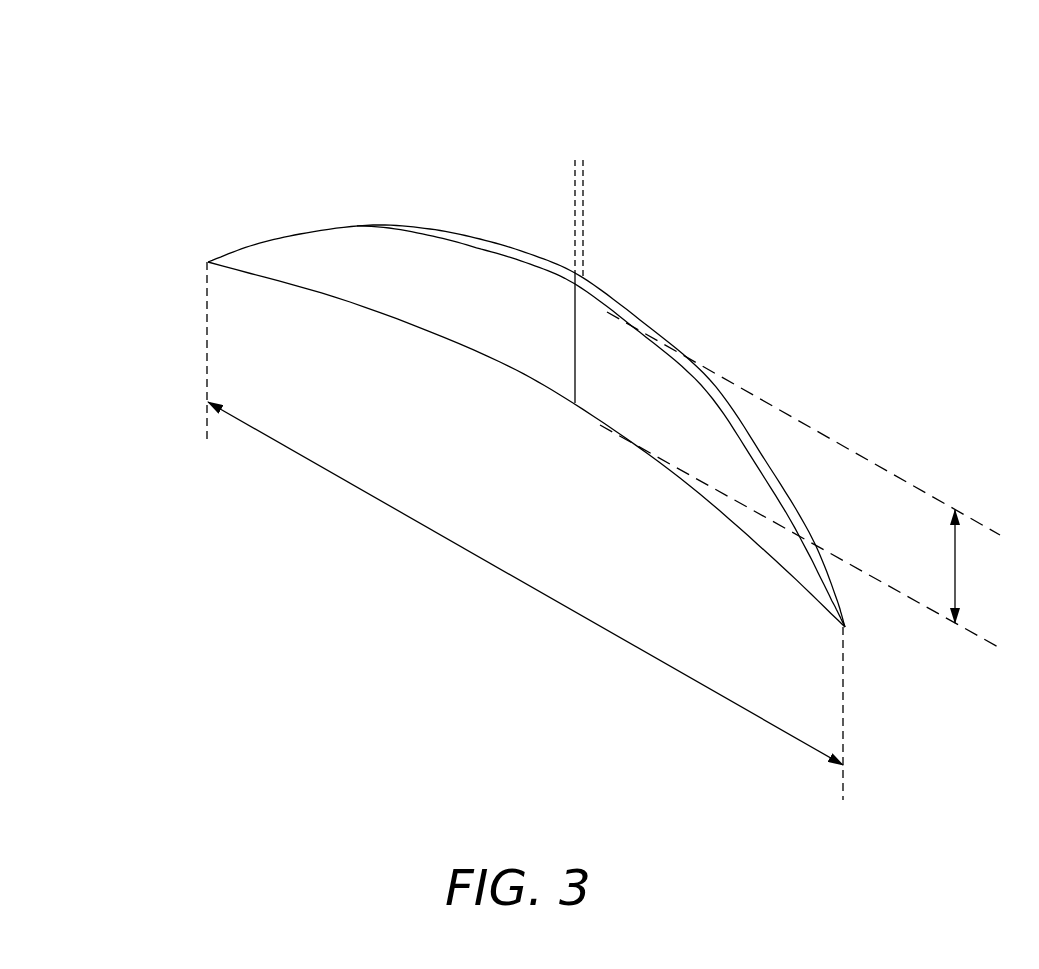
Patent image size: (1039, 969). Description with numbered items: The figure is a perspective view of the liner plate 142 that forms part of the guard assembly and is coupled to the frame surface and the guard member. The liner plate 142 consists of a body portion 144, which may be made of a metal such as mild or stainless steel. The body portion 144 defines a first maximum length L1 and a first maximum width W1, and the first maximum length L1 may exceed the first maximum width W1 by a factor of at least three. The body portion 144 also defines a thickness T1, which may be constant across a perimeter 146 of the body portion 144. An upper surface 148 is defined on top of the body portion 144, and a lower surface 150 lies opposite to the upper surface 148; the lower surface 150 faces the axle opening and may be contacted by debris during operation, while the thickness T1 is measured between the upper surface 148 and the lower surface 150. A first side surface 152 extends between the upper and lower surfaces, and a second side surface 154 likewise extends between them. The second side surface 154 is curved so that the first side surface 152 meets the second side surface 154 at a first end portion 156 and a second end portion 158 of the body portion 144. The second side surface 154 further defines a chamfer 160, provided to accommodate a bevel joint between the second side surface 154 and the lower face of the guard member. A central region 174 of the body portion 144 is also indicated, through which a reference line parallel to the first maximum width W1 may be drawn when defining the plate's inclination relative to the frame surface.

The liner plate 142 is at (225, 97).
The body portion 144 is at (607, 453).
The perimeter 146 is at (761, 549).
The upper surface 148 is at (745, 430).
The lower surface 150 is at (533, 344).
The first side surface 152 is at (452, 348).
The second side surface 154 is at (494, 244).
The first end portion 156 is at (848, 632).
The second end portion 158 is at (212, 268).
The chamfer 160 is at (626, 312).
The central region 174 is at (569, 318).
The first maximum length L1 is at (525, 583).
The first maximum width W1 is at (803, 467).
The thickness T1 is at (555, 188).